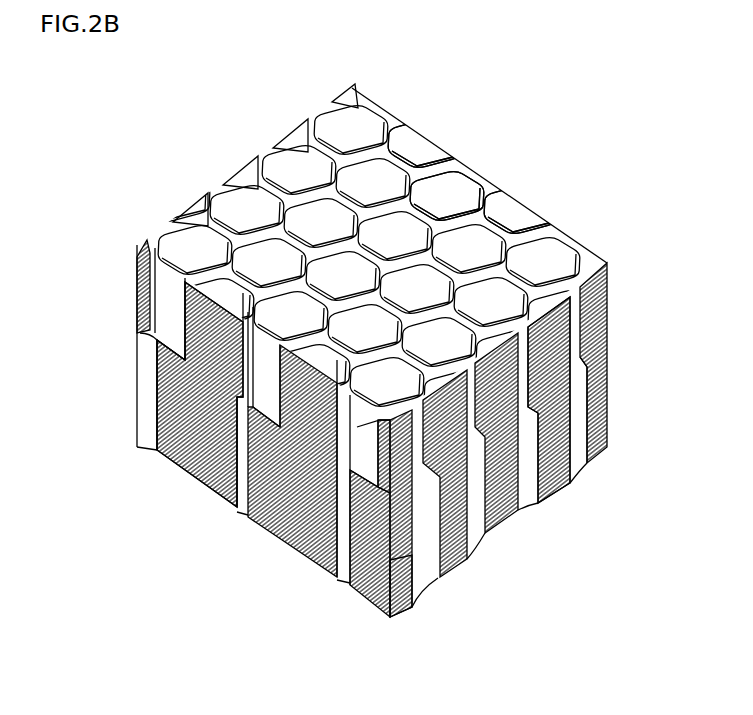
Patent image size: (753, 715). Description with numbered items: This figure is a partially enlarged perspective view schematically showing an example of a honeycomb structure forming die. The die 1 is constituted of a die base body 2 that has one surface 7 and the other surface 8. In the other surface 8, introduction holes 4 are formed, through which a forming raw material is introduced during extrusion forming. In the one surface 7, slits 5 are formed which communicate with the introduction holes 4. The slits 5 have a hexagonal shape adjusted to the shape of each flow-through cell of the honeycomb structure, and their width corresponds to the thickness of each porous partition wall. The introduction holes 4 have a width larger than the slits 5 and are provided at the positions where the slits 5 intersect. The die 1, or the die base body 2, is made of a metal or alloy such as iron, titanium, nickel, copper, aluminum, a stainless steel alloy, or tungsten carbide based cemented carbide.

The die 1 is at (559, 150).
The die base body 2 is at (600, 428).
The introduction holes 4 is at (577, 457).
The slits 5 is at (474, 213).
The one surface 7 is at (418, 145).
The other surface 8 is at (405, 607).